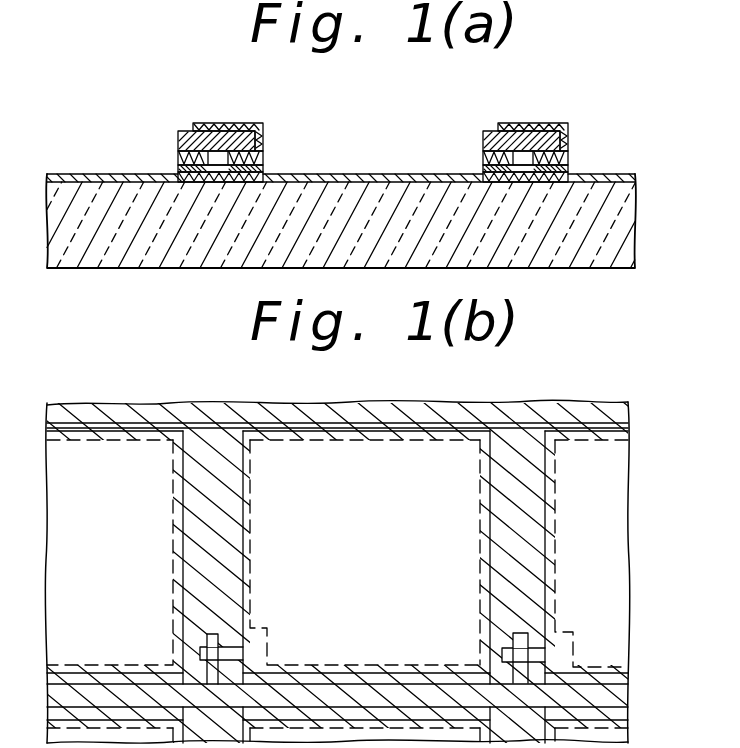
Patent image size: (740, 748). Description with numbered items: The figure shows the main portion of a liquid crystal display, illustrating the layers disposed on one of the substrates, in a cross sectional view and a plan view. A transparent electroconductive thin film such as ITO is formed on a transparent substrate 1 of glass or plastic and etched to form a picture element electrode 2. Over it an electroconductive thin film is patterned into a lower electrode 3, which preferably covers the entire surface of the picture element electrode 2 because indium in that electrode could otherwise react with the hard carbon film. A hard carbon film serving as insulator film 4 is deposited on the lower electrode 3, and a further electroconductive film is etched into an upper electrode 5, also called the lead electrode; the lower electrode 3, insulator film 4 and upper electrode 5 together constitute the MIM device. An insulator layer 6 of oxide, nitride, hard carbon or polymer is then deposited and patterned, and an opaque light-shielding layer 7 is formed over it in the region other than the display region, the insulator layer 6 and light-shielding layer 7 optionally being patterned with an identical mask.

In FIG. 1A, the transparent substrate 1 is at (615, 227).
In FIG. 1A, the picture element electrode 2 is at (75, 177).
In FIG. 1B, the picture element electrode 2 is at (602, 553).
In FIG. 1A, the lower electrode 3 is at (262, 170).
In FIG. 1B, the lower electrode 3 is at (537, 657).
In FIG. 1A, the insulator film 4 is at (263, 162).
In FIG. 1B, the insulator film 4 is at (337, 548).
In FIG. 1A, the upper electrode 5 is at (177, 157).
In FIG. 1B, the upper electrode 5 is at (608, 698).
In FIG. 1A, the insulator layer 6 is at (267, 142).
In FIG. 1B, the insulator layer 6 is at (337, 548).
In FIG. 1A, the light-shielding layer 7 is at (257, 123).
In FIG. 1B, the light-shielding layer 7 is at (515, 450).